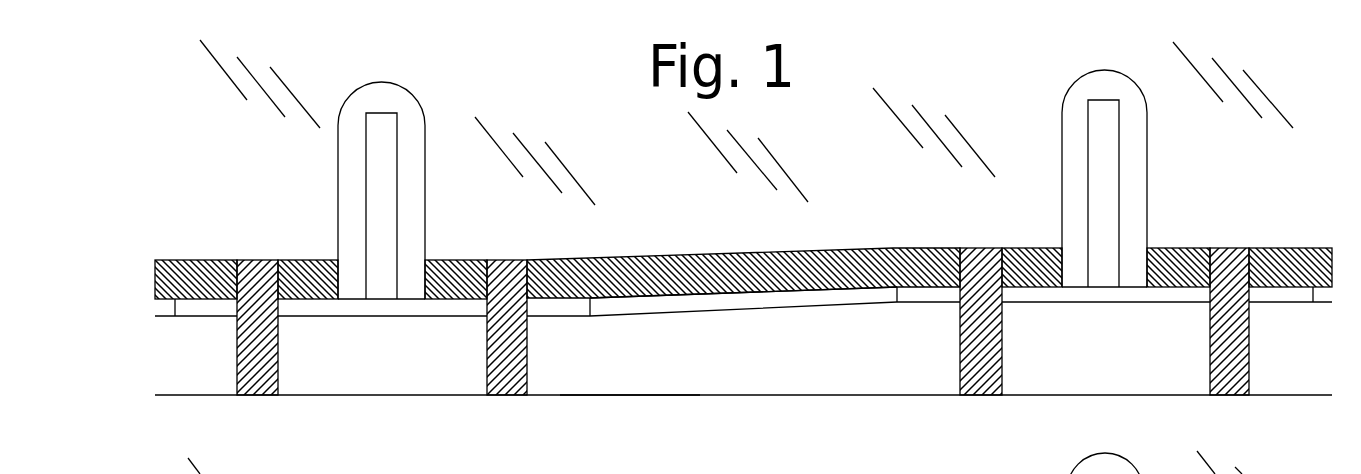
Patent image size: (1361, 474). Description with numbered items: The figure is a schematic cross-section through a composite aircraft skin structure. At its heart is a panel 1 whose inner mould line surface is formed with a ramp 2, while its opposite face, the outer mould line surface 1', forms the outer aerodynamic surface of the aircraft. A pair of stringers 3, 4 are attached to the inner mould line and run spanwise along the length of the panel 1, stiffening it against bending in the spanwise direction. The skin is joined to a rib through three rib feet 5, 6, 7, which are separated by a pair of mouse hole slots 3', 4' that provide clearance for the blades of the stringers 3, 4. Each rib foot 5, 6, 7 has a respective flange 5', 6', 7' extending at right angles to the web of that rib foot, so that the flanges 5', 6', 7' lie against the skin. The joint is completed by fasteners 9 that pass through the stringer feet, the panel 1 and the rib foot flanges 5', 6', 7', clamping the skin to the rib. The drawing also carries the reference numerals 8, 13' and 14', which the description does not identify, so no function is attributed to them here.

The panel 1 is at (743, 400).
The outer mould line surface 1' is at (619, 428).
The ramp 2 is at (820, 304).
The stringer 3 is at (1061, 193).
The mouse hole slot 3' is at (1068, 178).
The stringer 4 is at (339, 206).
The mouse hole slot 4' is at (347, 190).
The rib foot 5 is at (397, 122).
The flange 5' is at (196, 242).
The rib foot 6 is at (841, 145).
The flange 6' is at (743, 365).
The rib foot 7 is at (1233, 102).
The flange 7' is at (1290, 228).
The intermediate layer 8 is at (687, 303).
The fastener 9 is at (487, 370).
The component below substrate 13' is at (1070, 460).
The component below substrate 14' is at (248, 466).